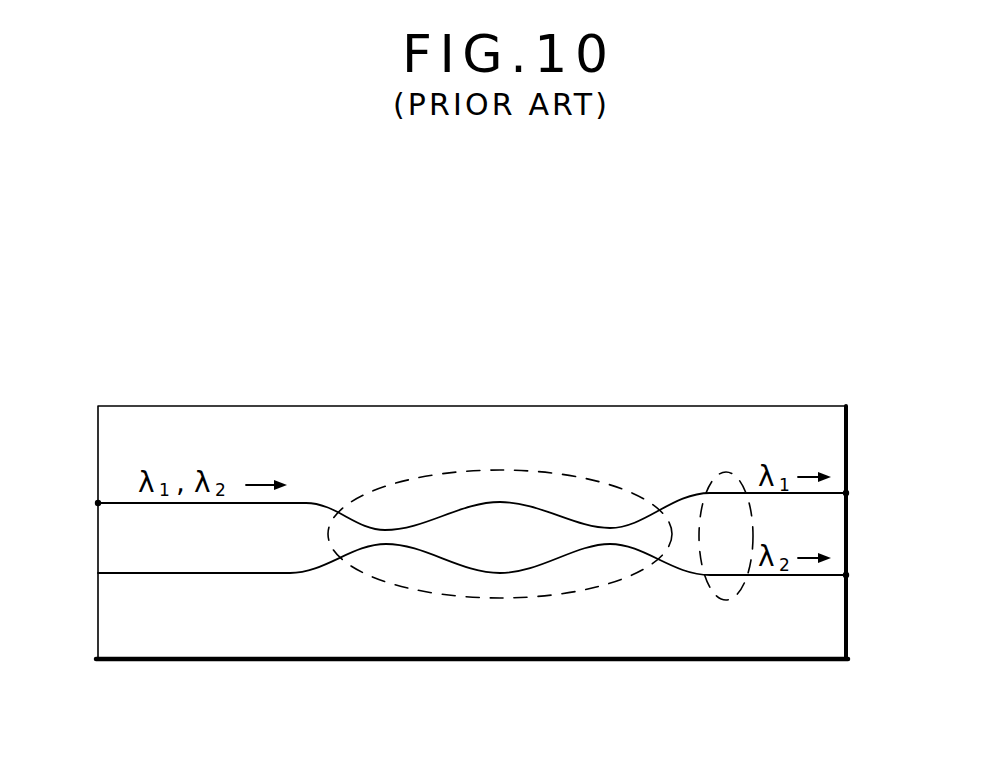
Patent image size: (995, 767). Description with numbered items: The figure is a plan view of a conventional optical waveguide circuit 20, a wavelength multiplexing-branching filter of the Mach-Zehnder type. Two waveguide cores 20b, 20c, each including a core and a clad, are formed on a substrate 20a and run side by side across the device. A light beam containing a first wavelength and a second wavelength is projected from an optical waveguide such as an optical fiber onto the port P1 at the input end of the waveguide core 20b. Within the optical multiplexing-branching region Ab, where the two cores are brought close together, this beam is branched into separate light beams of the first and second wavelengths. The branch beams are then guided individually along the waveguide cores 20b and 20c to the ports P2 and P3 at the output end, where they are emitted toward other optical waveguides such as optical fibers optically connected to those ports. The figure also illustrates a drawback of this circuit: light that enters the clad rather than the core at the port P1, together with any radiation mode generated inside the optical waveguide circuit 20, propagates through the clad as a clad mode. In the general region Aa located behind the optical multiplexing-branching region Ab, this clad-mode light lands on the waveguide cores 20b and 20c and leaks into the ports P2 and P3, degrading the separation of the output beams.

The optical waveguide circuit 20 is at (568, 406).
The substrate 20a is at (517, 640).
The waveguide core 20b is at (303, 500).
The waveguide core 20c is at (228, 575).
The optical multiplexing-branching region Ab is at (467, 470).
The general region Aa is at (727, 600).
The port P1 is at (96, 503).
The port P2 is at (848, 493).
The port P3 is at (848, 575).